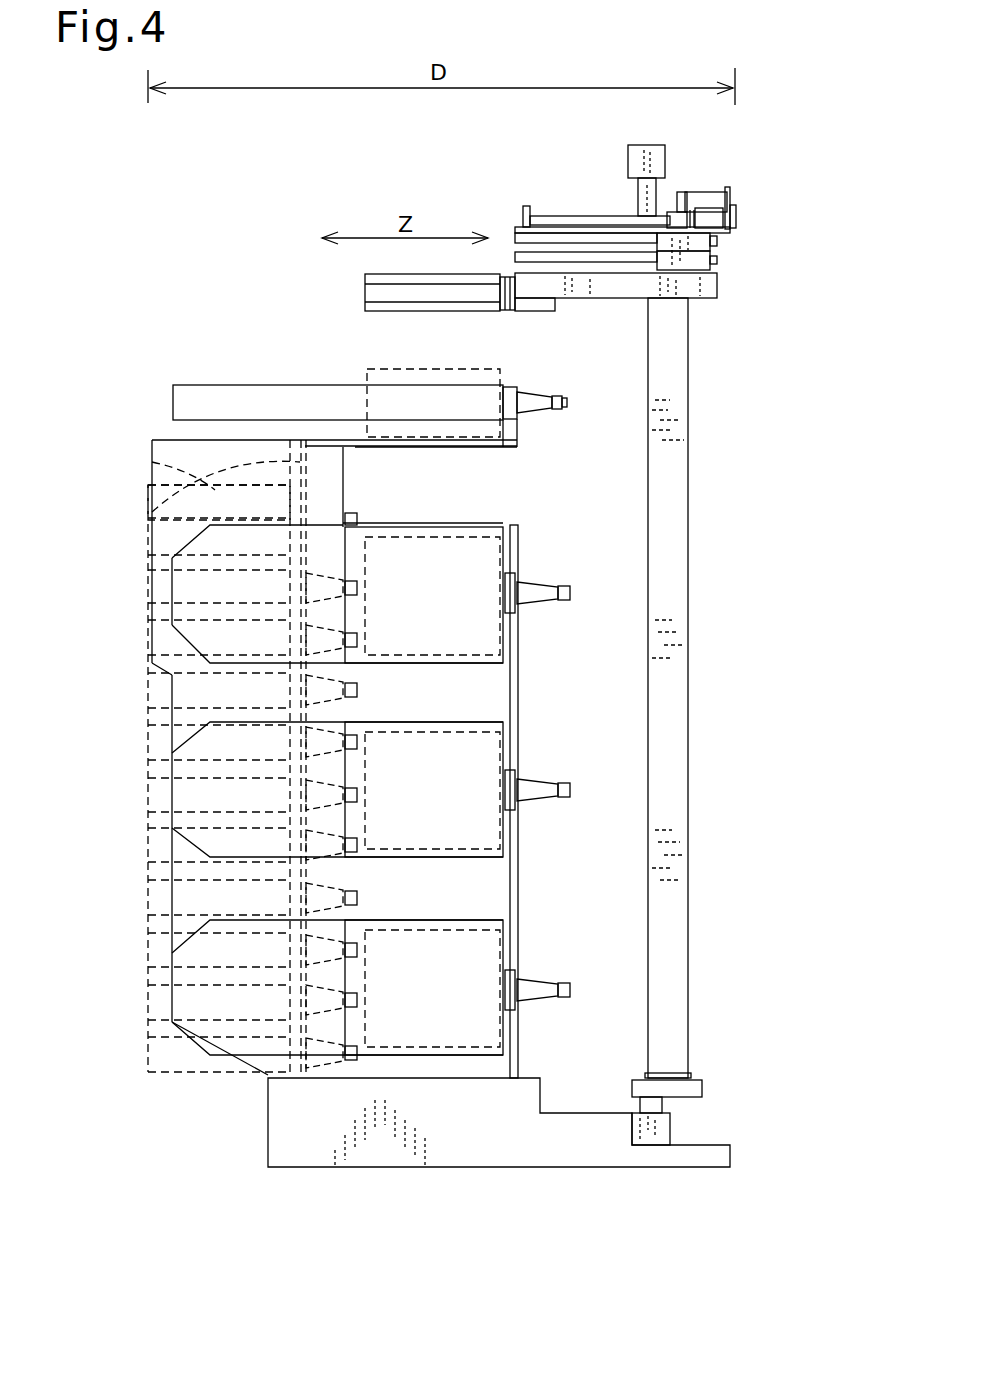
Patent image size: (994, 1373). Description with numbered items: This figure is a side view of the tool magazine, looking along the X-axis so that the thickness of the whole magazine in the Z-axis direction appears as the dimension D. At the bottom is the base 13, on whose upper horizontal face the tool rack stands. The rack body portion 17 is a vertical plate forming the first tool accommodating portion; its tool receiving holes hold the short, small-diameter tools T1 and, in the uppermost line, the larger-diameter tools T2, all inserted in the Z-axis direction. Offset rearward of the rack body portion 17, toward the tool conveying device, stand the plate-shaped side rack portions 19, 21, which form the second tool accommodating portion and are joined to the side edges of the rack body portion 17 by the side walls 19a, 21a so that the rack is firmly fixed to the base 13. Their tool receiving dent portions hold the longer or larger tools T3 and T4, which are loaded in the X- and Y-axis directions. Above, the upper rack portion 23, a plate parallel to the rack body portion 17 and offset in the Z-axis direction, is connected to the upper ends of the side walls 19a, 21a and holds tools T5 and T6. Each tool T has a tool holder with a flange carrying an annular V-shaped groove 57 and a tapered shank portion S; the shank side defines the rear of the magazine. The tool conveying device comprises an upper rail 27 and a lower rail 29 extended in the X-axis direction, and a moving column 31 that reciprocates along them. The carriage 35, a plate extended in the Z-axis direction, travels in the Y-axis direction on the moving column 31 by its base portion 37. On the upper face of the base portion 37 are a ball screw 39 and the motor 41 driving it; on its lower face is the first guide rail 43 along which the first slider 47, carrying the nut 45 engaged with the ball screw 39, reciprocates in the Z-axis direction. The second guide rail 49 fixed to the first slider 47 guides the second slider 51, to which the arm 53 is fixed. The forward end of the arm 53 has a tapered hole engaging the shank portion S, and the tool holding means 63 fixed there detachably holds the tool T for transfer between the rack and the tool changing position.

The base 13 is at (268, 1128).
The rack body portion 17 is at (150, 505).
The side rack portion 19 is at (567, 801).
The side wall 19a is at (300, 709).
The side rack portion 21 is at (520, 657).
The side wall 21a is at (262, 447).
The upper rack portion 23 is at (525, 427).
The upper rail 27 is at (647, 145).
The lower rail 29 is at (660, 1128).
The moving column 31 is at (678, 396).
The carriage 35 is at (783, 122).
The base portion 37 is at (520, 226).
The ball screw 39 is at (607, 214).
The motor 41 is at (682, 208).
The first guide rail 43 is at (550, 236).
The nut 45 is at (700, 212).
The first slider 47 is at (702, 243).
The second guide rail 49 is at (607, 262).
The second slider 51 is at (702, 263).
The arm 53 is at (708, 285).
The annular V-shaped groove 57 is at (505, 312).
The tool holding means 63 is at (547, 312).
The tool T is at (375, 278).
The short tool T1 is at (150, 600).
The large-diameter tool T2 is at (175, 480).
The long tool T3 is at (455, 532).
The long tool T4 is at (378, 525).
The long tool T5 is at (437, 368).
The long tool T6 is at (235, 385).
The shank portion S is at (538, 392).